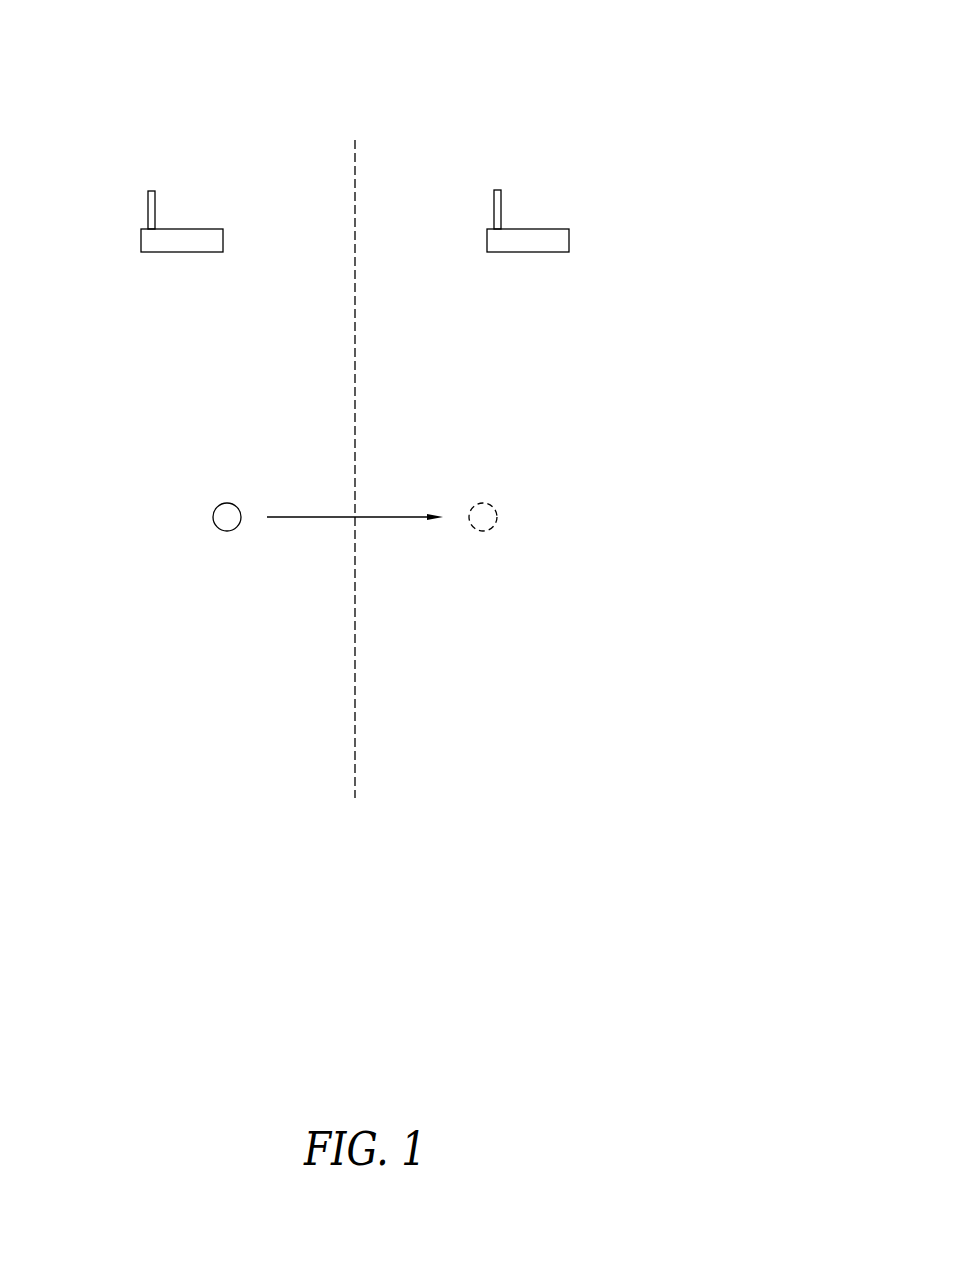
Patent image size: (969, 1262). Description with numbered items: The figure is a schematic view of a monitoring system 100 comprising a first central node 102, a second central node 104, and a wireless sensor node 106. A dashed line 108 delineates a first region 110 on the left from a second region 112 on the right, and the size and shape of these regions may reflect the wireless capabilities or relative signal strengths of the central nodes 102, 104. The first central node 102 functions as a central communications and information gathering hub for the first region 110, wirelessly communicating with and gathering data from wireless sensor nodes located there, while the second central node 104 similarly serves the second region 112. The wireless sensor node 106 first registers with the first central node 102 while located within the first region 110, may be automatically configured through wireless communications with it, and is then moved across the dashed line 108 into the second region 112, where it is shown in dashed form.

The monitoring system 100 is at (588, 72).
The first central node 102 is at (141, 261).
The second central node 104 is at (571, 262).
The wireless sensor node 106 is at (221, 530).
The dashed line 108 is at (356, 781).
The first region 110 is at (220, 737).
The second region 112 is at (489, 760).